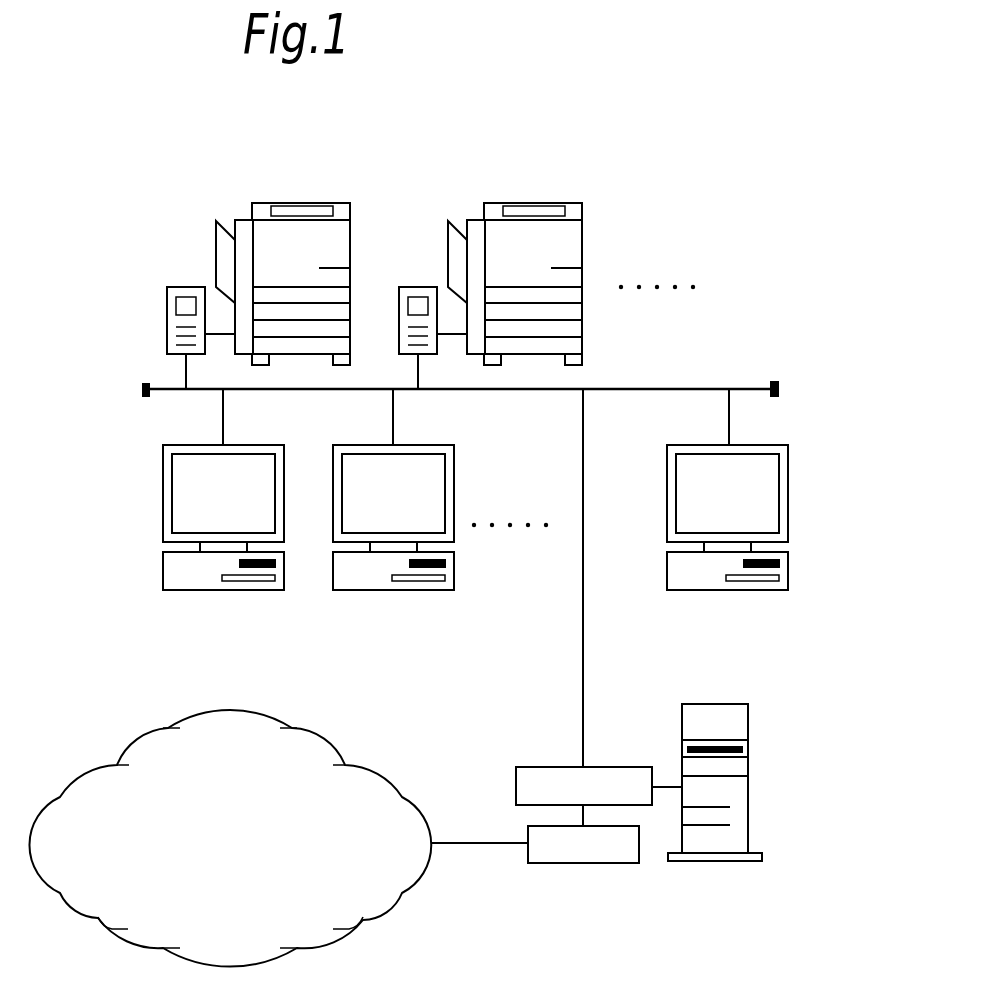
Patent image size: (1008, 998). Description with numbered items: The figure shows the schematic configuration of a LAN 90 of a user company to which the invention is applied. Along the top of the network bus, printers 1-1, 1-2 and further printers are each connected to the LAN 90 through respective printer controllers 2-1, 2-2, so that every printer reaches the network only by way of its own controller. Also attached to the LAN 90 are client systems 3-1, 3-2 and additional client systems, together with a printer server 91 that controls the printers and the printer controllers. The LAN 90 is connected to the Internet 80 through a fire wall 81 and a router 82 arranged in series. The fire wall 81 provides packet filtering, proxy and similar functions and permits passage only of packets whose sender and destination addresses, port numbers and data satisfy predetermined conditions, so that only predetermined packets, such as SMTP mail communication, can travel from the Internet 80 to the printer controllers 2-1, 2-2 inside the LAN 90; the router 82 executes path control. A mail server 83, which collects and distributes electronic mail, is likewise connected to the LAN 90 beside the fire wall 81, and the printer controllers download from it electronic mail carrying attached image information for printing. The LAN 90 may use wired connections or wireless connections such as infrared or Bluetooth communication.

The printer 1-1 is at (305, 200).
The printer 1-2 is at (537, 200).
The printer controller 2-1 is at (182, 285).
The printer controller 2-2 is at (414, 285).
The client system 3-1 is at (222, 590).
The client system 3-2 is at (392, 590).
The LAN 90 is at (760, 396).
The printer server 91 is at (727, 591).
The fire wall 81 is at (558, 767).
The router 82 is at (583, 863).
The mail server 83 is at (754, 744).
The Internet 80 is at (305, 852).